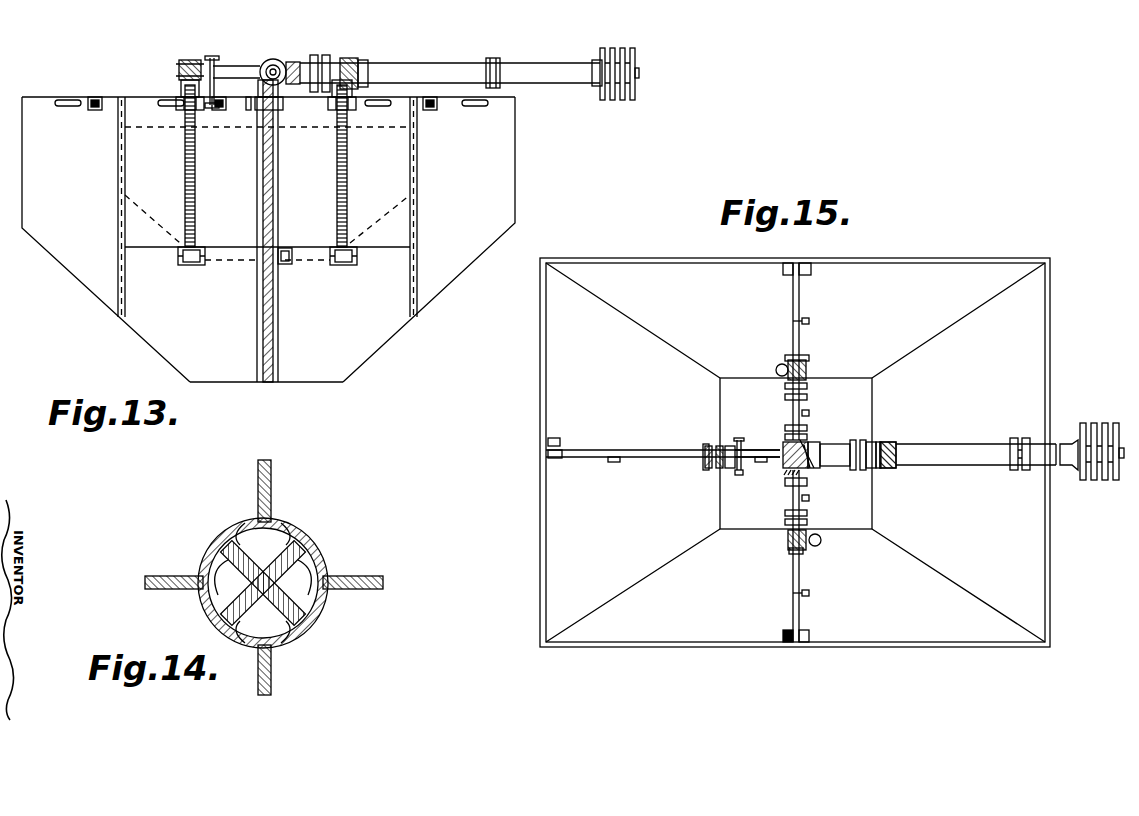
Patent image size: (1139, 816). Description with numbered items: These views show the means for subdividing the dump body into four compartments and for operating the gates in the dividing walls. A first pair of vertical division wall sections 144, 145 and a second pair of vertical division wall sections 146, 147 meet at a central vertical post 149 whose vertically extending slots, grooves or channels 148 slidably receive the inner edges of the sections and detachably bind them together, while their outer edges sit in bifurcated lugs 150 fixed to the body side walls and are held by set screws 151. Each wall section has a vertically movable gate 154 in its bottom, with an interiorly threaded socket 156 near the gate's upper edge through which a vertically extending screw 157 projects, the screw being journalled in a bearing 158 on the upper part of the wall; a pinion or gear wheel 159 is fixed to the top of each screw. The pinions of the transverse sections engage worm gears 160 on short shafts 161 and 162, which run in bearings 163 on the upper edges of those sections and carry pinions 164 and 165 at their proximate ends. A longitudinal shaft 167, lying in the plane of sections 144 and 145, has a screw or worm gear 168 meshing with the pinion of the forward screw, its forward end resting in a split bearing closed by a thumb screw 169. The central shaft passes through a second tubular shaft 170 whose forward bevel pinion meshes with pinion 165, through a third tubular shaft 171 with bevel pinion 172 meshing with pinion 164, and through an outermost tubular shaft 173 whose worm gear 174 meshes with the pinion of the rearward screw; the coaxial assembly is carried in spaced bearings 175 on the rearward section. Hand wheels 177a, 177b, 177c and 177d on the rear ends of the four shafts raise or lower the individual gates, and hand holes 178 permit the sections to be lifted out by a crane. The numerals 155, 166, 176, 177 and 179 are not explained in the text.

In FIG. 13, the vertical division wall section 144 is at (86, 278).
In FIG. 14, the vertical division wall section 144 is at (170, 556).
In FIG. 15, the vertical division wall section 144 is at (577, 450).
In FIG. 13, the vertical division wall section 145 is at (431, 299).
In FIG. 14, the vertical division wall section 145 is at (370, 598).
In FIG. 13, the vertical division wall section 146 is at (263, 238).
In FIG. 14, the vertical division wall section 146 is at (272, 660).
In FIG. 15, the vertical division wall section 146 is at (799, 612).
In FIG. 14, the vertical division wall section 147 is at (272, 495).
In FIG. 15, the vertical division wall section 147 is at (800, 297).
In FIG. 14, the vertically extending slot, groove or channel 148 is at (318, 548).
In FIG. 14, the central vertical post 149 is at (222, 530).
In FIG. 15, the bifurcated lug 150 is at (783, 270).
In FIG. 15, the set screw 151 is at (813, 271).
In FIG. 13, the vertically movable gate 154 is at (162, 346).
In FIG. 13, the partition wall 155 is at (120, 316).
In FIG. 13, the interiorly threaded socket 156 is at (180, 266).
In FIG. 13, the vertically extending screw 157 is at (194, 212).
In FIG. 13, the bearing 158 is at (178, 90).
In FIG. 13, the pinion or gear wheel 159 is at (190, 62).
In FIG. 15, the pinion or gear wheel 159 is at (778, 372).
In FIG. 15, the worm gear 160 is at (786, 357).
In FIG. 15, the short shaft 161 is at (792, 558).
In FIG. 15, the short shaft 162 is at (806, 359).
In FIG. 15, the bearing 163 is at (806, 387).
In FIG. 13, the pinion or gear wheel 164 is at (298, 54).
In FIG. 15, the pinion or gear wheel 164 is at (783, 474).
In FIG. 15, the pinion or gear wheel 165 is at (786, 442).
In FIG. 13, the worm 166 is at (178, 70).
In FIG. 15, the worm 166 is at (704, 446).
In FIG. 13, the shaft 167 is at (221, 68).
In FIG. 15, the shaft 167 is at (702, 462).
In FIG. 13, the screw or worm gear 168 is at (246, 110).
In FIG. 15, the screw or worm gear 168 is at (732, 475).
In FIG. 13, the thumb screw 169 is at (210, 56).
In FIG. 15, the thumb screw 169 is at (730, 440).
In FIG. 15, the second tubular shaft 170 is at (813, 448).
In FIG. 13, the third tubular shaft 171 is at (365, 60).
In FIG. 15, the third tubular shaft 171 is at (836, 454).
In FIG. 13, the bevel gear or pinion 172 is at (324, 57).
In FIG. 15, the bevel gear or pinion 172 is at (816, 468).
In FIG. 13, the tubular shaft 173 is at (454, 62).
In FIG. 15, the tubular shaft 173 is at (934, 446).
In FIG. 13, the worm gear 174 is at (364, 52).
In FIG. 15, the worm gear 174 is at (892, 433).
In FIG. 13, the bearing 175 is at (487, 58).
In FIG. 15, the bearing 175 is at (861, 472).
In FIG. 15, the collar 176 is at (878, 468).
In FIG. 13, the pulley 177 is at (618, 104).
In FIG. 15, the pulley 177 is at (1073, 479).
In FIG. 15, the hand wheel 177a is at (1086, 420).
In FIG. 15, the hand wheel 177b is at (1093, 482).
In FIG. 15, the hand wheel 177c is at (1104, 424).
In FIG. 15, the hand wheel 177d is at (1113, 484).
In FIG. 13, the hand hole 178 is at (62, 107).
In FIG. 13, the bracket 179 is at (98, 112).